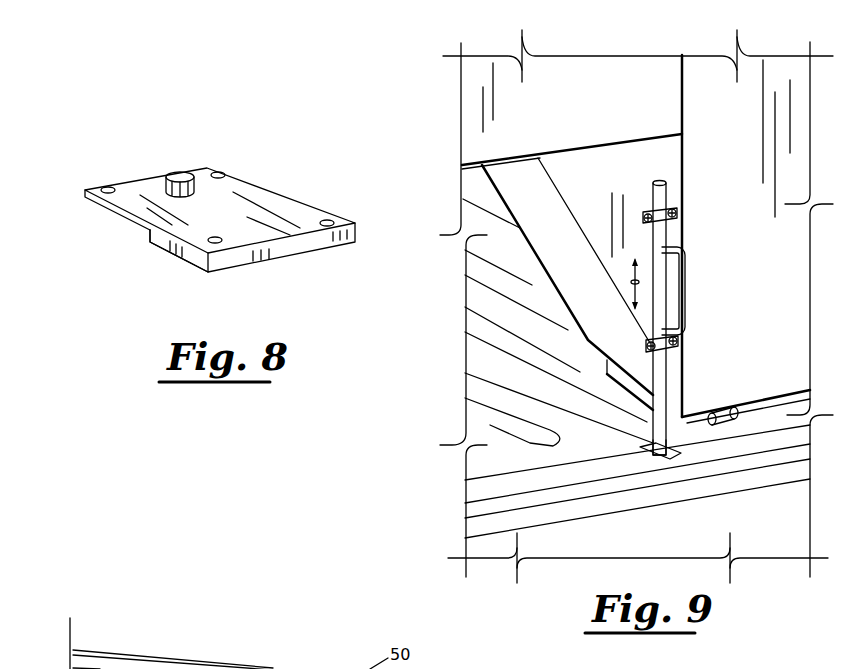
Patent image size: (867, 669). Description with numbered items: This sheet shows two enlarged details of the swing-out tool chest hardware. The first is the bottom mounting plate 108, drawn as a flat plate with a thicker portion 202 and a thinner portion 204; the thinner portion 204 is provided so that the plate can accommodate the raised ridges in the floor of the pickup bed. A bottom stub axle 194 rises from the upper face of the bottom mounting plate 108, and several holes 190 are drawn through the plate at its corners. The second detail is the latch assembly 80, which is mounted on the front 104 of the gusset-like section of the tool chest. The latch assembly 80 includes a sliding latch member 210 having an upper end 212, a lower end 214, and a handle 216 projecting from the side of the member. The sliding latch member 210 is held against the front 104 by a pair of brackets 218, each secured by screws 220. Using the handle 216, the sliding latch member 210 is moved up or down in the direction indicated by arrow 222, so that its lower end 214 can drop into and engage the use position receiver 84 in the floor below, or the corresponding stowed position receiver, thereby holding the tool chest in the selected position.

In FIG. 8, the bottom mounting plate 108 is at (304, 166).
In FIG. 8, the mounting holes 190 is at (108, 186).
In FIG. 8, the bottom stub axle 194 is at (173, 172).
In FIG. 8, the thicker portion 202 is at (187, 257).
In FIG. 8, the thinner portion 204 is at (118, 213).
In FIG. 9, the front 104 is at (620, 184).
In FIG. 9, the latch assembly 80 is at (685, 291).
In FIG. 9, the sliding latch member 210 is at (662, 385).
In FIG. 9, the upper end 212 is at (662, 181).
In FIG. 9, the lower end 214 is at (657, 435).
In FIG. 9, the handle 216 is at (688, 297).
In FIG. 9, the brackets 218 is at (683, 227).
In FIG. 9, the screws 220 is at (675, 207).
In FIG. 9, the arrow 222 is at (632, 283).
In FIG. 9, the use position receiver 84 is at (673, 458).